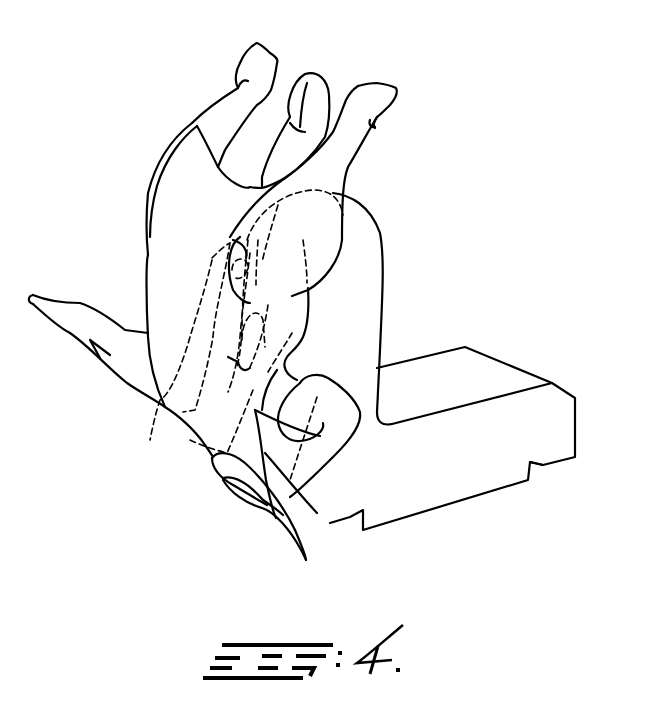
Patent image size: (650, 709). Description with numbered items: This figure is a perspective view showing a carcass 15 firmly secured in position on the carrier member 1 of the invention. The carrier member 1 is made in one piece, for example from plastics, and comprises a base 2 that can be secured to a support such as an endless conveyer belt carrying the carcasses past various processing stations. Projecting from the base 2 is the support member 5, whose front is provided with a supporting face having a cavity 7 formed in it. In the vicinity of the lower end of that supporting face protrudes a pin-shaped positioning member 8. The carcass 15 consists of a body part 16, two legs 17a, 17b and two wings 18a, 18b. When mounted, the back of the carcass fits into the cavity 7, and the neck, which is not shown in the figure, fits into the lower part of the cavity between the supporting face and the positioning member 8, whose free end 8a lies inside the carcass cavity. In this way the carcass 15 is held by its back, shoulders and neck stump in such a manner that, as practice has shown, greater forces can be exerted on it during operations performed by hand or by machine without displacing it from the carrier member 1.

The carrier member 1 is at (452, 361).
The base 2 is at (481, 370).
The support member 5 is at (372, 297).
The cavity 7 is at (255, 292).
The pin-shaped positioning member 8 is at (158, 425).
The free end of the positioning member 8a is at (212, 258).
The carcass 15 is at (228, 305).
The body part 16 is at (160, 292).
The leg 17a is at (237, 87).
The leg 17b is at (372, 120).
The wing 18a is at (112, 358).
The wing 18b is at (290, 480).